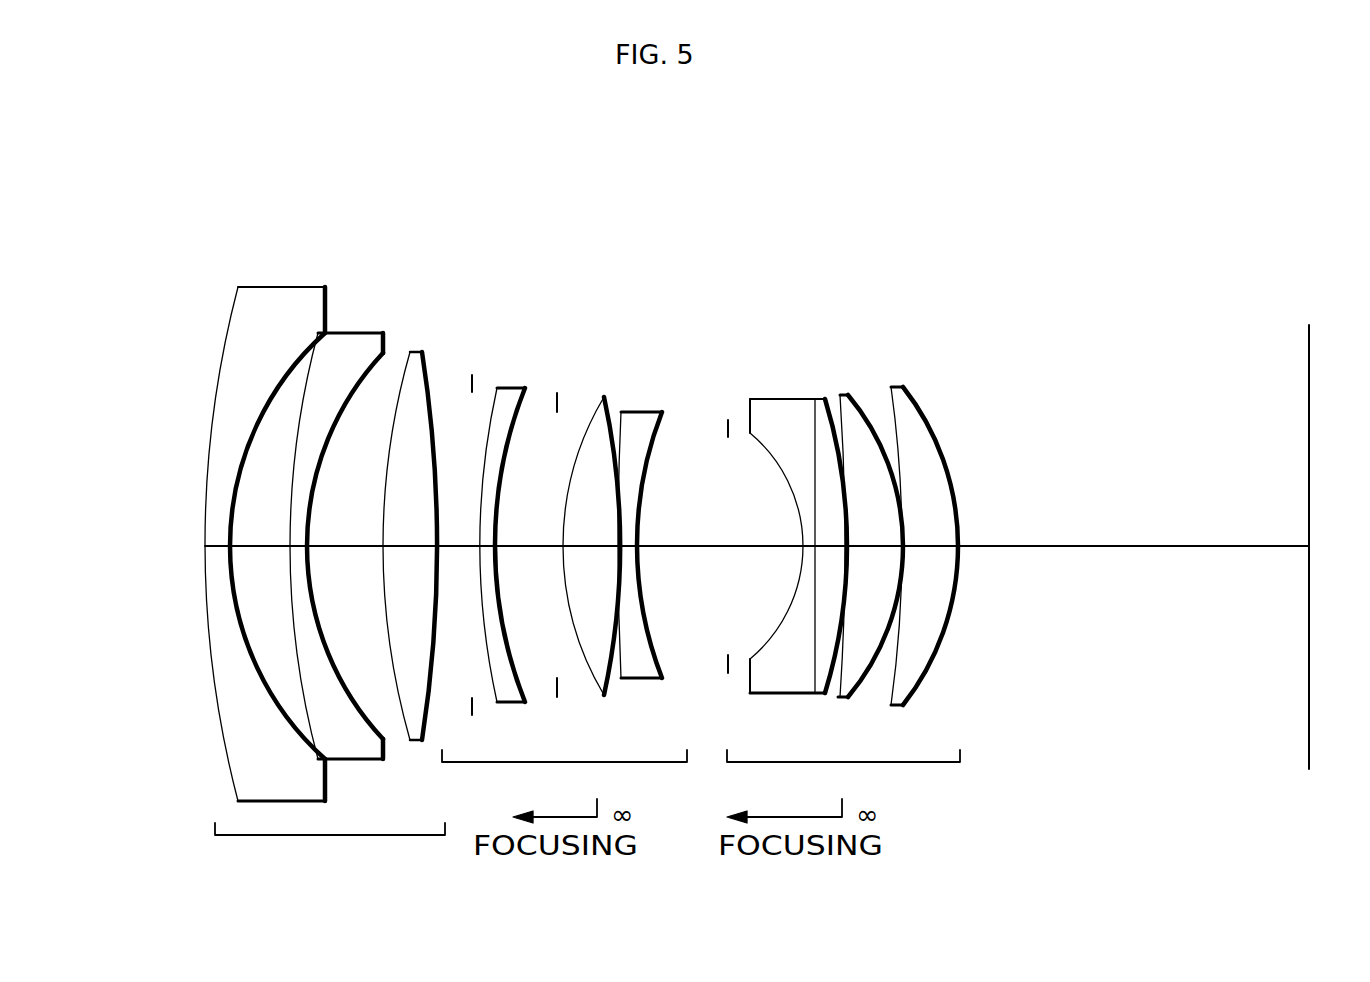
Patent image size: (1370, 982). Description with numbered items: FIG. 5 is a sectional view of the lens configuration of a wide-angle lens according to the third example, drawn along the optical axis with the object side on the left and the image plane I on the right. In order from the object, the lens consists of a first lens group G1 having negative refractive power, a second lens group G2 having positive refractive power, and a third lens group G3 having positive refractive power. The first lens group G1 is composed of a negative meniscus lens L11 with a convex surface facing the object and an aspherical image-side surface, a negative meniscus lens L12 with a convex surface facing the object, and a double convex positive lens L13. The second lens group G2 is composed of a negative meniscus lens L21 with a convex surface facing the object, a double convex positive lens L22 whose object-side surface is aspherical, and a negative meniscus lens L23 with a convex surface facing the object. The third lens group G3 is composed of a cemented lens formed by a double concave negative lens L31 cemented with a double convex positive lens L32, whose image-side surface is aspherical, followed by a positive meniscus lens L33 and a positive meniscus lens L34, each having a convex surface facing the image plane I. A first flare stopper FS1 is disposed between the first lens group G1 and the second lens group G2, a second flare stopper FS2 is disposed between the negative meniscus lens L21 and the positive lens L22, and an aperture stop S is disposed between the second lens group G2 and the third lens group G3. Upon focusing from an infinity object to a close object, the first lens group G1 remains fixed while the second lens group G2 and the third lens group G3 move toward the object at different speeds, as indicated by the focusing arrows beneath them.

The negative meniscus lens L11 is at (282, 287).
The negative meniscus lens L12 is at (362, 332).
The double convex positive lens L13 is at (417, 350).
The first flare stopper FS1 is at (472, 375).
The negative meniscus lens L21 is at (512, 388).
The second flare stopper FS2 is at (557, 393).
The double convex positive lens L22 is at (604, 397).
The negative meniscus lens L23 is at (648, 412).
The aperture stop S is at (728, 420).
The double concave negative lens L31 is at (777, 399).
The double convex positive lens L32 is at (817, 399).
The positive meniscus lens L33 is at (847, 397).
The positive meniscus lens L34 is at (900, 387).
The image plane I is at (1309, 388).
The first lens group G1 is at (330, 848).
The second lens group G2 is at (564, 774).
The third lens group G3 is at (843, 774).